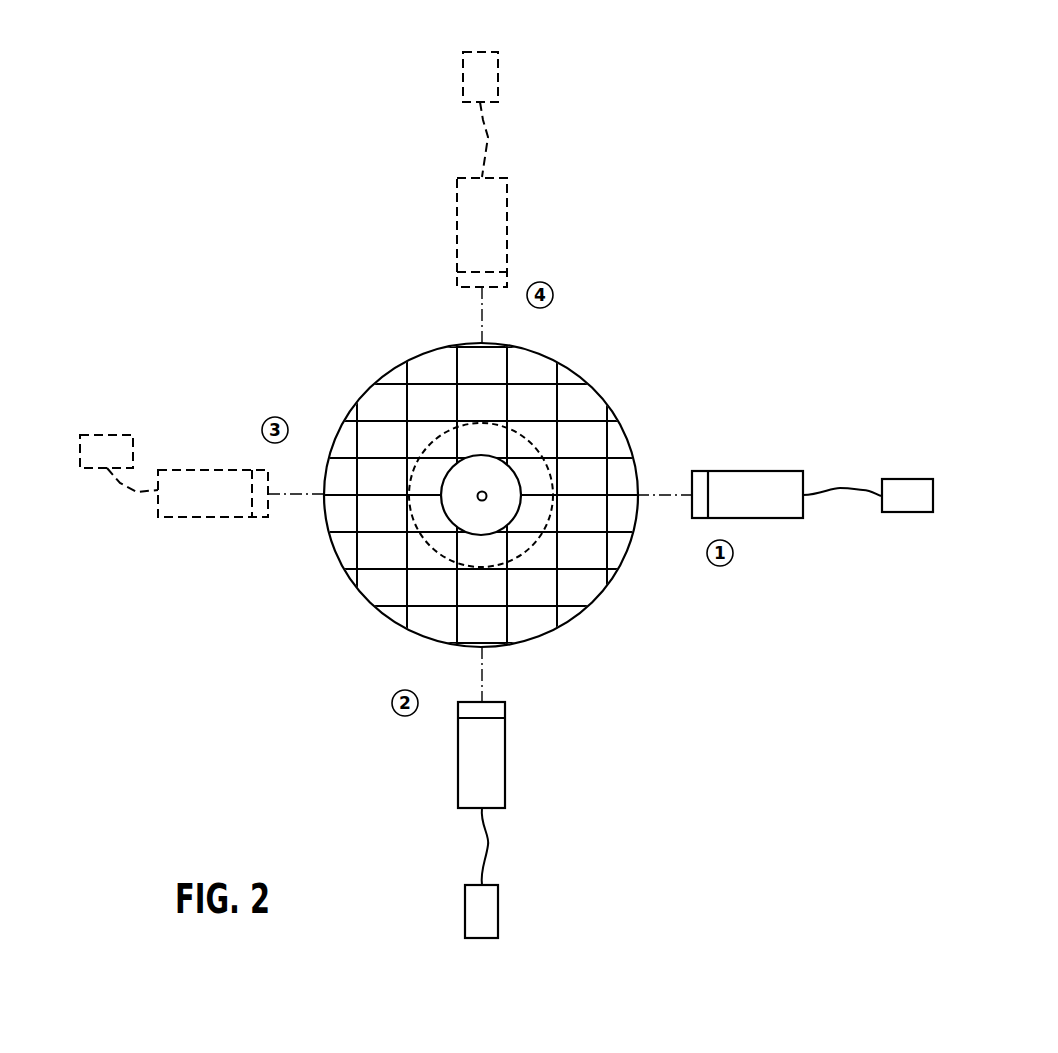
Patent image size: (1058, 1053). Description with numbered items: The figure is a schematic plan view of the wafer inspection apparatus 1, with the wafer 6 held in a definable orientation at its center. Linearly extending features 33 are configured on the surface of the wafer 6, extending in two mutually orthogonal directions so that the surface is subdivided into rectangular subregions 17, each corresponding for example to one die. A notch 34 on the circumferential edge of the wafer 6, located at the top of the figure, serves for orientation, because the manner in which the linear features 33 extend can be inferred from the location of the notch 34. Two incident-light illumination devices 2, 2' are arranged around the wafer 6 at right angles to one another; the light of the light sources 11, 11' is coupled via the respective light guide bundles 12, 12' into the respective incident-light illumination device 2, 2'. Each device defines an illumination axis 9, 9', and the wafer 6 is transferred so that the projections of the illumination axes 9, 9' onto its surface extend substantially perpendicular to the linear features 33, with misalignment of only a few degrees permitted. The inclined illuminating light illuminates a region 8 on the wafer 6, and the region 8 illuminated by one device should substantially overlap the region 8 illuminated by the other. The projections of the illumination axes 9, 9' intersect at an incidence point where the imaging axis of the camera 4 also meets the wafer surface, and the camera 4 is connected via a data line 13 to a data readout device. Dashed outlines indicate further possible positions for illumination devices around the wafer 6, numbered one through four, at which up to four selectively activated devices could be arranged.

The wafer inspection apparatus 1 is at (293, 231).
The incident-light illumination device 2 is at (747, 455).
The incident-light illumination device 2' is at (518, 755).
The camera 4 is at (484, 499).
The wafer 6 is at (600, 388).
The region 8 is at (493, 420).
The illumination axis 9 is at (664, 537).
The illumination axis 9' is at (523, 674).
The light source 11 is at (907, 459).
The light source 11' is at (525, 911).
The light guide bundle 12 is at (842, 451).
The light guide bundle 12' is at (533, 846).
The data line 13 is at (505, 507).
The rectangular subregions 17 is at (430, 397).
The linearly extending features 33 is at (608, 447).
The notch 34 is at (482, 343).